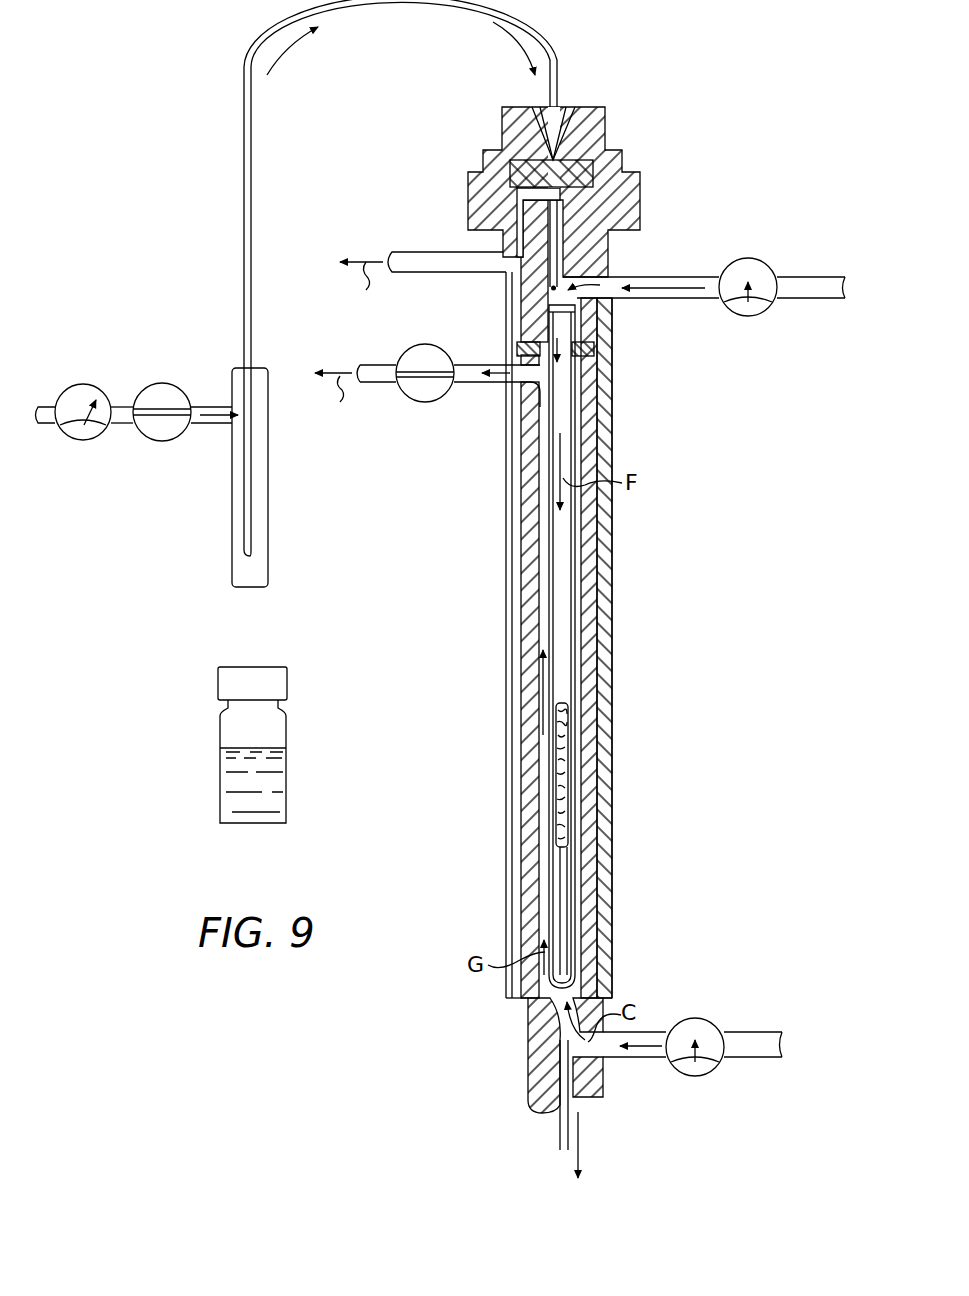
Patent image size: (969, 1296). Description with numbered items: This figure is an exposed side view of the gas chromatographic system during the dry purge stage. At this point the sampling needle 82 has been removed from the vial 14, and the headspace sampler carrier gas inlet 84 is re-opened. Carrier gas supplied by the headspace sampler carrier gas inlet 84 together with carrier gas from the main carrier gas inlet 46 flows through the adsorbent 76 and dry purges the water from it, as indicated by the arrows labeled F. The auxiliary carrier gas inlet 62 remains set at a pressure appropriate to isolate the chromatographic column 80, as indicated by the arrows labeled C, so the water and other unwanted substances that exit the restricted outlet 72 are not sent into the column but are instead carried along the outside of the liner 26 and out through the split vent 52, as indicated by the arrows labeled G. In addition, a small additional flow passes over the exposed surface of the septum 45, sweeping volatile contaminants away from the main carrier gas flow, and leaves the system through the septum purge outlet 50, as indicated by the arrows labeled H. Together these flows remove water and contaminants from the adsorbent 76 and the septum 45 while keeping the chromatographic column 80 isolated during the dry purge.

The vial 14 is at (246, 826).
The liner 26 is at (563, 672).
The septum 45 is at (592, 143).
The main carrier gas inlet 46 is at (770, 260).
The septum purge outlet 50 is at (432, 252).
The split vent 52 is at (455, 390).
The auxiliary carrier gas inlet 62 is at (714, 1020).
The restricted outlet 72 is at (538, 1036).
The adsorbent 76 is at (570, 768).
The chromatographic column 80 is at (562, 1138).
The sampling needle 82 is at (247, 558).
The headspace sampler carrier gas inlet 84 is at (131, 398).